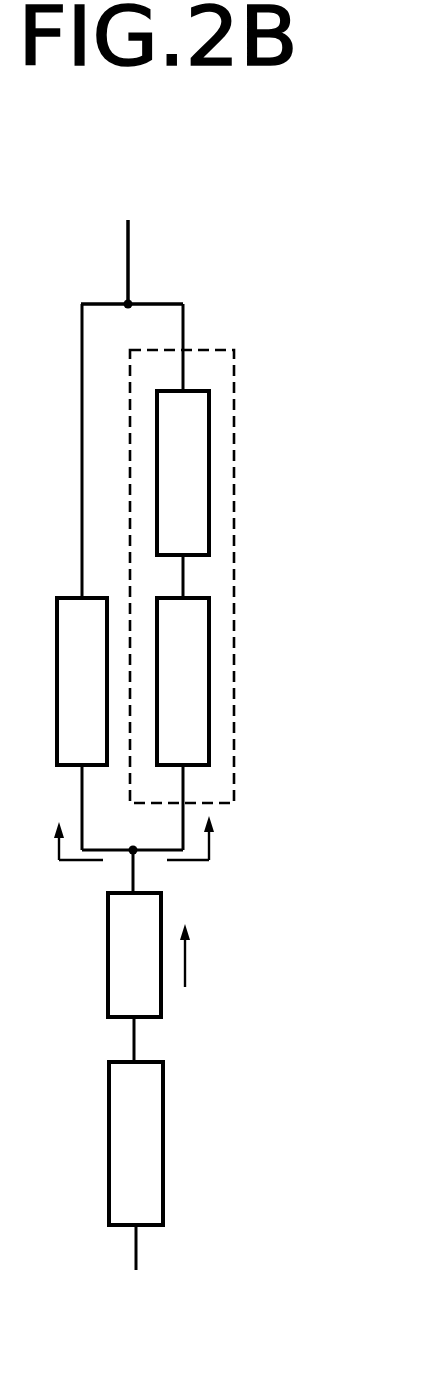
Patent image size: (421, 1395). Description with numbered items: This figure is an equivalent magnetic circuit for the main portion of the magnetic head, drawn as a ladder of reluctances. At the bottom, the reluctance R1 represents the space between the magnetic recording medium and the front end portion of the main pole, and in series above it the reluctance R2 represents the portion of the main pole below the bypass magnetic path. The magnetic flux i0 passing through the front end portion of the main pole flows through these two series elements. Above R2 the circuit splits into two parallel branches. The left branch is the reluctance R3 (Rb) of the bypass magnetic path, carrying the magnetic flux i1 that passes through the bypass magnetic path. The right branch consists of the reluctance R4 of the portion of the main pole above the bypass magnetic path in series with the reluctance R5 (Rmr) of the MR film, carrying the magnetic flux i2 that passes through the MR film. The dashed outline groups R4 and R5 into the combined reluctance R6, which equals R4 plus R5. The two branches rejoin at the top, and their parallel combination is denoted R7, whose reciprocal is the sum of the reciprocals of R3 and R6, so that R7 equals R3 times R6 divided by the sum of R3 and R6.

The reluctance of the space between the magnetic recording medium and the front end R1 is at (136, 1143).
The reluctance of the portion of the main pole below the bypass magnetic path R2 is at (134, 955).
The reluctance of the bypass magnetic path R3 is at (82, 681).
The reluctance of the portion of the main pole above the bypass magnetic path R4 is at (183, 681).
The reluctance of the MR film R5 is at (183, 473).
The combined series reluctance of R4 and R5 R6 is at (234, 393).
The combined parallel reluctance of R3 and R6 R7 is at (189, 266).
The magnetic flux passing through the bypass magnetic path i1 is at (65, 836).
The magnetic flux passing through the MR film i2 is at (204, 836).
The magnetic flux passing through the front end portion of the main pole i0 is at (199, 955).